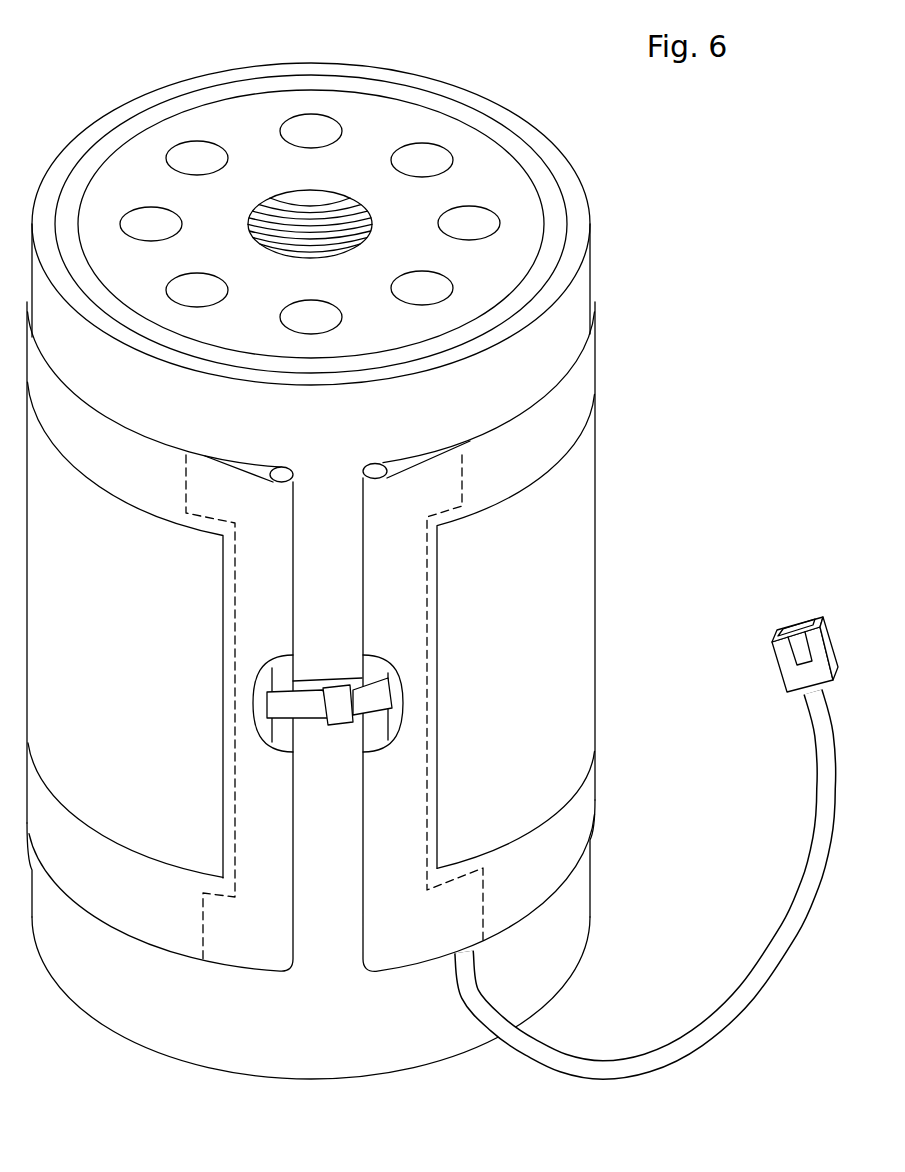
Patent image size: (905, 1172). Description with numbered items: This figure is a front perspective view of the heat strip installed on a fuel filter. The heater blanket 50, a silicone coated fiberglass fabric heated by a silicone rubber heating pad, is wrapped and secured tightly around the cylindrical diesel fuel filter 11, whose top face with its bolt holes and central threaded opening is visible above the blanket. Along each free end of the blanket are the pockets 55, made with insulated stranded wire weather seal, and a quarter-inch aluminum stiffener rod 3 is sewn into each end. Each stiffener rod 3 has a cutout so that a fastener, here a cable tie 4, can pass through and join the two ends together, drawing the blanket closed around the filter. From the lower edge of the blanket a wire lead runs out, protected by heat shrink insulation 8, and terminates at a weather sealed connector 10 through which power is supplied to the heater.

The diesel fuel filter 11 is at (572, 298).
The heater blanket 50 is at (572, 503).
The pockets 55 is at (397, 458).
The aluminum stiffener rod 3 is at (283, 678).
The cable tie 4 is at (323, 687).
The heat shrink insulation 8 is at (825, 817).
The weather sealed connector 10 is at (818, 620).